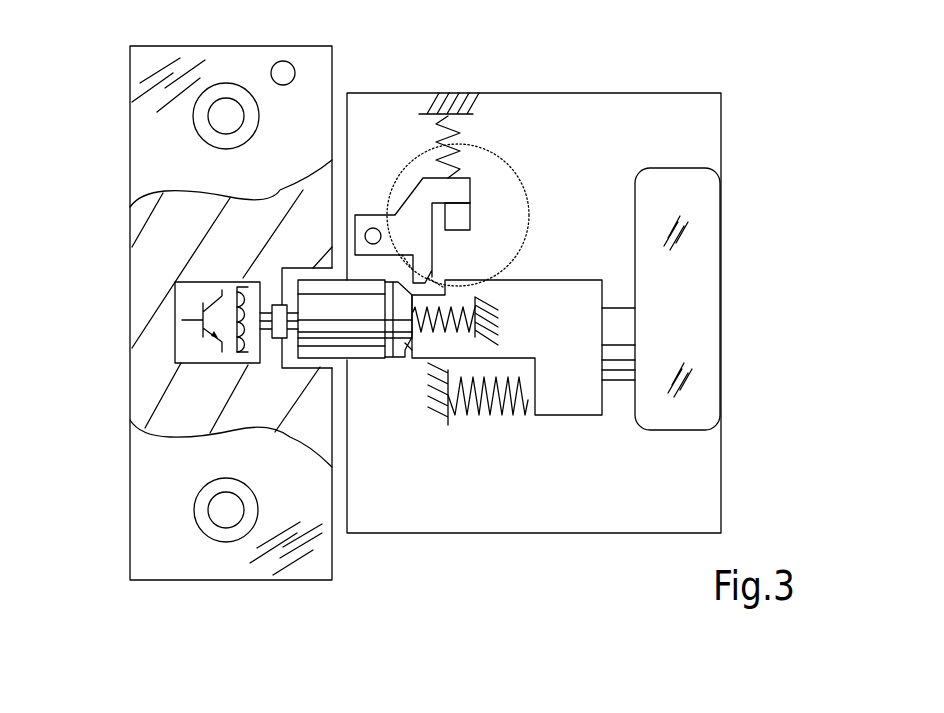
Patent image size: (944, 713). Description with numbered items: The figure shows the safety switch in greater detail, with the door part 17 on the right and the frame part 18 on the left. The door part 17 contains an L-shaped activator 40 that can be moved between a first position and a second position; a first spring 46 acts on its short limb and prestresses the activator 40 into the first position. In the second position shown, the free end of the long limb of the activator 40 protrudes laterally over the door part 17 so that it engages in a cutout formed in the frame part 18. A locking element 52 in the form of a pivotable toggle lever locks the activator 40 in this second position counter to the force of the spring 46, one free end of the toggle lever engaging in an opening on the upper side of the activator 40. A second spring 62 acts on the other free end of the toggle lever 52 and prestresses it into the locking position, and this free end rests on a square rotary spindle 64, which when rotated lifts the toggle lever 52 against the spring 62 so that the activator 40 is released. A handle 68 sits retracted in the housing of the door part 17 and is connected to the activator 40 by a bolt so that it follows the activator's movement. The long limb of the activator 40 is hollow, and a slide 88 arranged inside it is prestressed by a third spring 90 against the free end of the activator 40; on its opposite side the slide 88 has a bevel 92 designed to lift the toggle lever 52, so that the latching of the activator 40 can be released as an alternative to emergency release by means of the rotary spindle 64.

The door part 17 is at (728, 132).
The frame part 18 is at (124, 145).
The activator 40 is at (558, 393).
The first spring 46 is at (493, 405).
The locking element 52 is at (418, 207).
The second spring 62 is at (462, 147).
The rotary spindle 64 is at (458, 217).
The handle 68 is at (702, 292).
The slide 88 is at (347, 318).
The third spring 90 is at (455, 300).
The bevel 92 is at (405, 343).